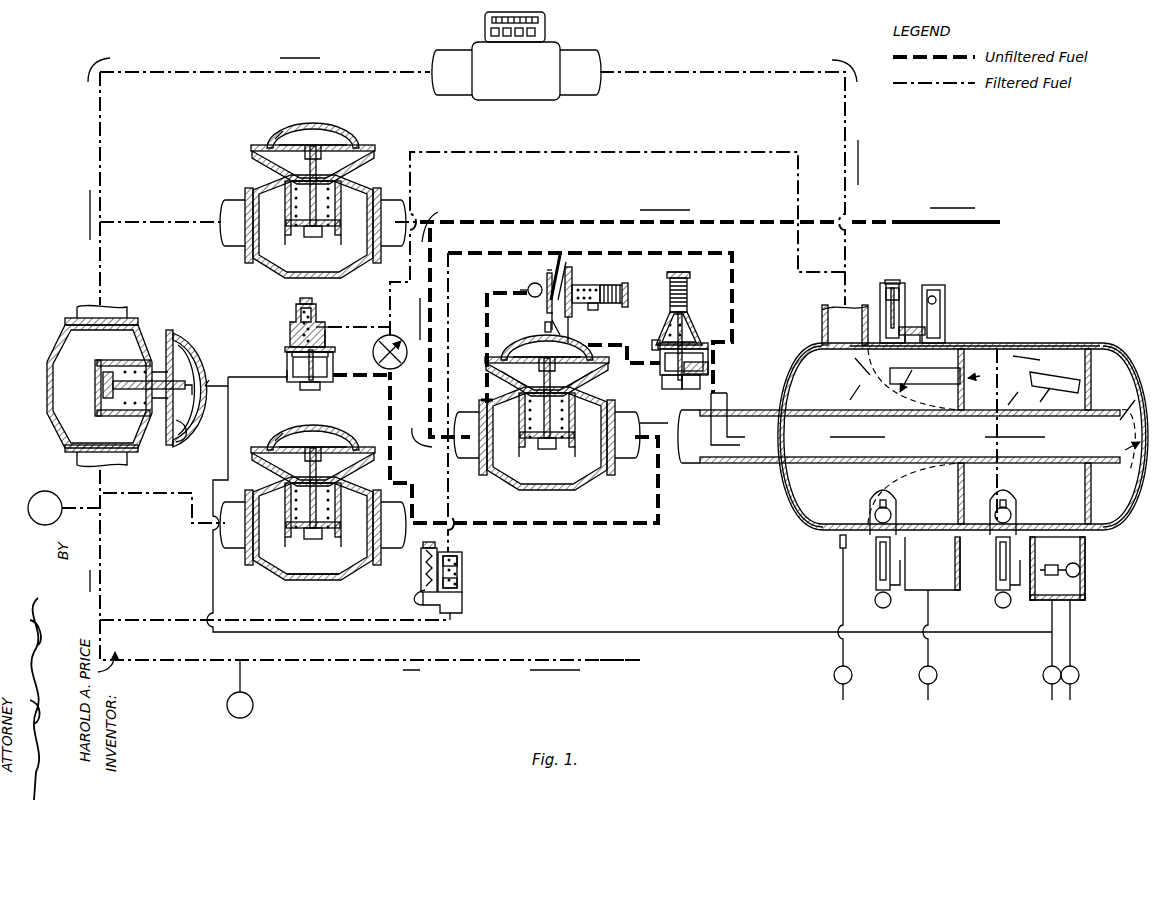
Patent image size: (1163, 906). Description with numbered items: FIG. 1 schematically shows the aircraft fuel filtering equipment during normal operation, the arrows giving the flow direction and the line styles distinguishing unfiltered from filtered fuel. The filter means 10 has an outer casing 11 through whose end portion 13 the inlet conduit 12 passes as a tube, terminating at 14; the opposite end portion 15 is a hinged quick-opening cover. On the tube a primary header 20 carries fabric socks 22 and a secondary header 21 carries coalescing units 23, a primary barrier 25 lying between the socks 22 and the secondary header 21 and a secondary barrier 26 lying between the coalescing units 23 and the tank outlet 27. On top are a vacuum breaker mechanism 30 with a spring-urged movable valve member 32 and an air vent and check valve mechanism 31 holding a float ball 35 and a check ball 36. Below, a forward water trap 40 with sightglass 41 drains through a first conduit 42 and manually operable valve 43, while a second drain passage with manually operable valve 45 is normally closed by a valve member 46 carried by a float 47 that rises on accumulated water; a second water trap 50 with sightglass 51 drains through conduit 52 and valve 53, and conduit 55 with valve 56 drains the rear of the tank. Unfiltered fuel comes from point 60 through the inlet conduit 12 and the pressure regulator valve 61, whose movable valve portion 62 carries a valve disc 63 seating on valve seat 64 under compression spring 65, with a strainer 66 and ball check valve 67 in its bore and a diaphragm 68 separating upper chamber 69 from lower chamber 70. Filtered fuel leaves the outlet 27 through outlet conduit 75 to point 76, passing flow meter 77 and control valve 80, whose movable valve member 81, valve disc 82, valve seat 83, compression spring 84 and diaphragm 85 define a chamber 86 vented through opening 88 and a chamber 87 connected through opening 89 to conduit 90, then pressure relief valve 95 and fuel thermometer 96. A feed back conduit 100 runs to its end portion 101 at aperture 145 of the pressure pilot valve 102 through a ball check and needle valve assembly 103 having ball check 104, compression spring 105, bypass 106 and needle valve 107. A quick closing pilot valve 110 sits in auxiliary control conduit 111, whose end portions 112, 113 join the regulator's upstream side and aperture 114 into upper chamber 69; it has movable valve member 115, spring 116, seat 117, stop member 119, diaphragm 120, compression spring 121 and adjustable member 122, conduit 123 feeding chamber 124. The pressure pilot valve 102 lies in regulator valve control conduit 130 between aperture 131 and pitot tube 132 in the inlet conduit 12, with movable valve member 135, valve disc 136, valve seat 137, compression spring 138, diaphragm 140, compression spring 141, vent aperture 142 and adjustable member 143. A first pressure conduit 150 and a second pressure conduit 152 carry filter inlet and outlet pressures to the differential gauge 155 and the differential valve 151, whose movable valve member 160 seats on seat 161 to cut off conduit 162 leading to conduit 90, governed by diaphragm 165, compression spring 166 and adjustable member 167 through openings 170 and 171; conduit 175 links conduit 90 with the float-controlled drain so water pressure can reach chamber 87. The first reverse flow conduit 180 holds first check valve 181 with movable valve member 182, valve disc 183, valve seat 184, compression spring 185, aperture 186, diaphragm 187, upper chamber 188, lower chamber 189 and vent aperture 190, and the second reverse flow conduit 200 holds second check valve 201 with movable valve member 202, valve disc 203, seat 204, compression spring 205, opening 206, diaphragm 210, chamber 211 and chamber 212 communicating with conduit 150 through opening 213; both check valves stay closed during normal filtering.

The filter means 10 is at (1018, 336).
The outer casing 11 is at (1055, 343).
The inlet conduit 12 is at (594, 222).
The end portion 13 is at (806, 366).
The inlet conduit termination 14 is at (1131, 412).
The end portion 15 is at (1104, 343).
The primary header 20 is at (1092, 494).
The secondary header 21 is at (968, 494).
The socks 22 is at (1063, 380).
The coalescing units 23 is at (920, 368).
The primary barrier 25 is at (1001, 369).
The secondary barrier 26 is at (870, 380).
The outlet 27 is at (835, 345).
The vacuum breaker mechanism 30 is at (900, 290).
The air vent and check valve mechanism 31 is at (944, 292).
The movable valve member 32 is at (889, 284).
The float ball 35 is at (940, 316).
The check ball 36 is at (932, 295).
The forward water trap 40 is at (1085, 587).
The sightglass 41 is at (997, 585).
The first conduit 42 is at (1075, 600).
The manually operable valve 43 is at (1079, 677).
The manually operable valve 45 is at (1043, 677).
The valve member 46 is at (1053, 565).
The float 47 is at (1081, 570).
The second water trap 50 is at (944, 592).
The sightglass 51 is at (875, 592).
The conduit 52 is at (930, 656).
The manually operable valve 53 is at (937, 677).
The conduit 55 is at (840, 592).
The manually operable valve 56 is at (834, 678).
The point 60 is at (982, 222).
The pressure regulator valve 61 is at (547, 443).
The movable valve portion 62 is at (559, 420).
The valve disc 63 is at (560, 433).
The valve seat 64 is at (542, 459).
The compression spring 65 is at (524, 402).
The strainer 66 is at (548, 454).
The ball check valve 67 is at (556, 345).
The diaphragm 68 is at (555, 379).
The upper chamber 69 is at (547, 348).
The lower chamber 70 is at (540, 385).
The outlet conduit 75 is at (102, 166).
The point 76 is at (628, 660).
The flow meter 77 is at (550, 48).
The control valve 80 is at (143, 327).
The movable valve member 81 is at (136, 396).
The valve disc 82 is at (104, 392).
The valve seat 83 is at (95, 374).
The compression spring 84 is at (126, 363).
The diaphragm 85 is at (190, 360).
The chamber 86 is at (196, 374).
The chamber 87 is at (200, 386).
The opening 88 is at (167, 358).
The opening 89 is at (200, 402).
The conduit 90 is at (226, 380).
The pressure relief valve 95 is at (54, 502).
The fuel thermometer 96 is at (254, 706).
The feed back conduit 100 is at (631, 254).
The end portion 101 is at (718, 342).
The pressure pilot valve 102 is at (698, 290).
The ball check and needle valve assembly 103 is at (468, 559).
The ball check 104 is at (462, 587).
The compression spring 105 is at (462, 570).
The bypass 106 is at (422, 597).
The needle valve 107 is at (423, 572).
The quick closing pilot valve 110 is at (613, 289).
The auxiliary control conduit 111 is at (478, 308).
The end portion 112 is at (474, 395).
The end portion 113 is at (545, 330).
The aperture 114 is at (552, 330).
The movable valve member 115 is at (528, 291).
The spring 116 is at (557, 266).
The seat 117 is at (546, 284).
The stop member 119 is at (571, 280).
The diaphragm 120 is at (596, 287).
The compression spring 121 is at (620, 305).
The adjustable member 122 is at (629, 296).
The conduit 123 is at (567, 260).
The chamber 124 is at (592, 310).
The regulator valve control conduit 130 is at (656, 376).
The aperture 131 is at (604, 345).
The pitot tube 132 is at (748, 434).
The movable valve member 135 is at (702, 372).
The valve disc 136 is at (688, 389).
The valve seat 137 is at (662, 362).
The compression spring 138 is at (665, 389).
The diaphragm 140 is at (648, 335).
The compression spring 141 is at (690, 302).
The aperture 142 is at (698, 330).
The adjustable member 143 is at (680, 272).
The aperture 145 is at (710, 348).
The first pressure conduit 150 is at (592, 524).
The differential valve 151 is at (292, 322).
The second pressure conduit 152 is at (628, 152).
The differential gauge 155 is at (400, 363).
The movable valve member 160 is at (306, 368).
The seat 161 is at (305, 392).
The conduit 162 is at (257, 390).
The diaphragm 165 is at (343, 338).
The compression spring 166 is at (298, 345).
The adjustable member 167 is at (306, 298).
The opening 170 is at (322, 322).
The opening 171 is at (330, 362).
The conduit 175 is at (229, 445).
The first reverse flow conduit 180 is at (170, 222).
The first check valve 181 is at (308, 210).
The movable valve member 182 is at (319, 245).
The valve disc 183 is at (312, 247).
The valve seat 184 is at (302, 237).
The compression spring 185 is at (283, 186).
The laterally extending aperture 186 is at (324, 208).
The diaphragm 187 is at (316, 131).
The upper chamber 188 is at (270, 124).
The lower chamber 189 is at (313, 130).
The aperture 190 is at (309, 167).
The second reverse flow conduit 200 is at (164, 508).
The second check valve 201 is at (313, 523).
The movable valve member 202 is at (293, 488).
The valve disc 203 is at (324, 518).
The seat 204 is at (328, 531).
The compression spring 205 is at (316, 585).
The laterally extending opening 206 is at (300, 516).
The diaphragm 210 is at (313, 433).
The chamber 211 is at (262, 432).
The chamber 212 is at (309, 433).
The opening 213 is at (314, 469).